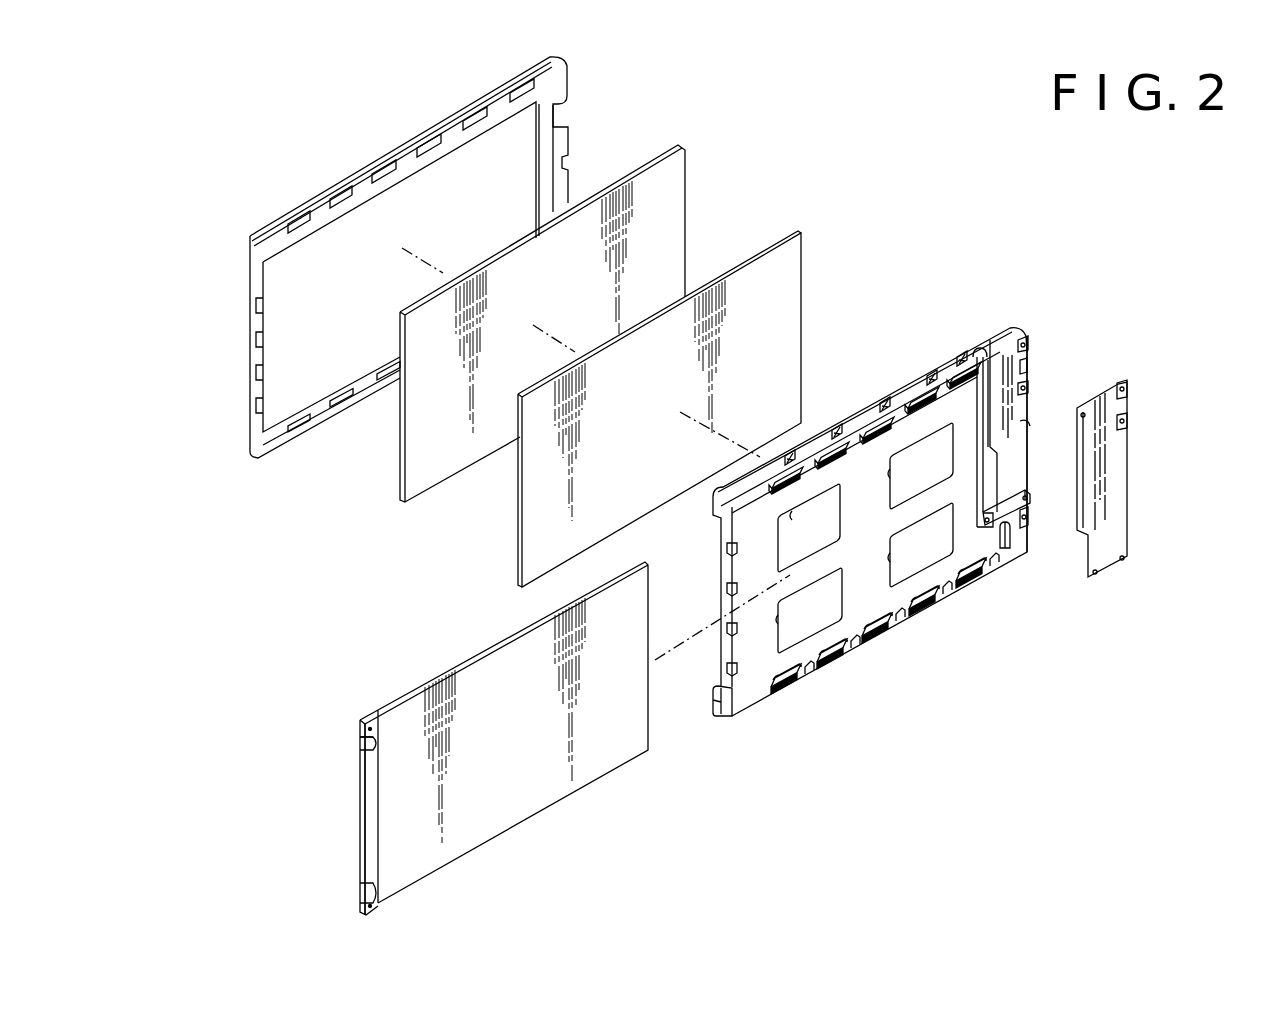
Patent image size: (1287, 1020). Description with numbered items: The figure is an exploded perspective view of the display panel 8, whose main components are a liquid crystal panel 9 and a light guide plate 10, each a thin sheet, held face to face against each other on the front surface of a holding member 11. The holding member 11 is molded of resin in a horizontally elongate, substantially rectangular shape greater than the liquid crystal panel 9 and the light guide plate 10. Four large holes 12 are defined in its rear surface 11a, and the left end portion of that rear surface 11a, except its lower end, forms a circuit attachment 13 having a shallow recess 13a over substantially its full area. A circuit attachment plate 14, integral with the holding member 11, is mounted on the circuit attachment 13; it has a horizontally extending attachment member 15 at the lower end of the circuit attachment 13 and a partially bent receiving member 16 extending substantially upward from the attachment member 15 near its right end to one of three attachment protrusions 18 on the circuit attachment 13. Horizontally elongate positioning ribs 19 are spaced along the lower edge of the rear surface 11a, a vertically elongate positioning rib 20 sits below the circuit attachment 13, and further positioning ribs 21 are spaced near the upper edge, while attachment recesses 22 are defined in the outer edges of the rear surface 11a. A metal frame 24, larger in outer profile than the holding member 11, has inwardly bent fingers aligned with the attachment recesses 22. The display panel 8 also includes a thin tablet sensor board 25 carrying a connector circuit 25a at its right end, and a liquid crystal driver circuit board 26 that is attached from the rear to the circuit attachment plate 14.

The display panel 8 is at (865, 150).
The liquid crystal panel 9 is at (653, 165).
The light guide plate 10 is at (775, 247).
The holding member 11 is at (745, 690).
The rear surface 11a is at (747, 652).
The large holes 12 is at (789, 512).
The circuit attachment 13 is at (1015, 342).
The shallow recess 13a is at (1020, 400).
The circuit attachment plate 14 is at (988, 466).
The attachment member 15 is at (1020, 507).
The receiving member 16 is at (988, 417).
The attachment protrusions 18 is at (985, 350).
The positioning ribs 19 is at (788, 686).
The positioning rib 20 is at (1012, 545).
The positioning ribs 21 is at (960, 377).
The attachment recesses 22 is at (962, 354).
The metal frame 24 is at (493, 103).
The tablet sensor board 25 is at (542, 790).
The connector circuit 25a is at (373, 833).
The liquid crystal driver circuit board 26 is at (1107, 545).